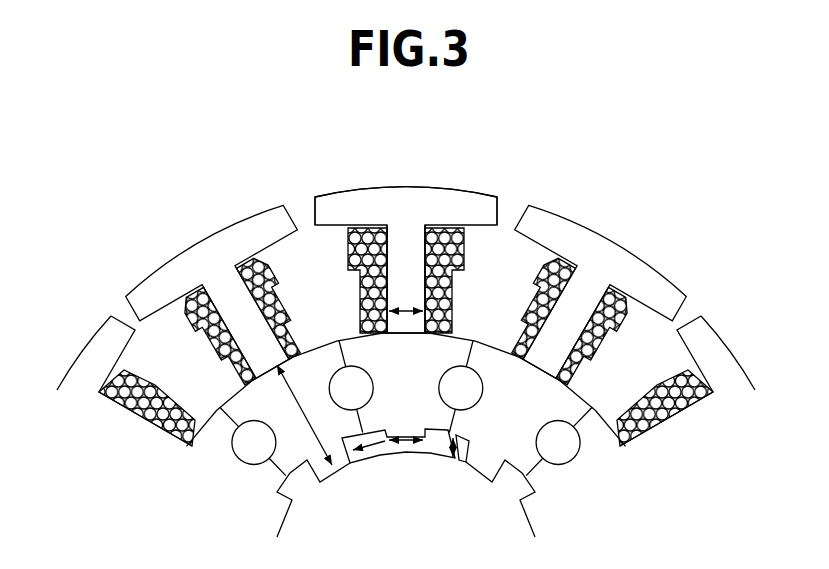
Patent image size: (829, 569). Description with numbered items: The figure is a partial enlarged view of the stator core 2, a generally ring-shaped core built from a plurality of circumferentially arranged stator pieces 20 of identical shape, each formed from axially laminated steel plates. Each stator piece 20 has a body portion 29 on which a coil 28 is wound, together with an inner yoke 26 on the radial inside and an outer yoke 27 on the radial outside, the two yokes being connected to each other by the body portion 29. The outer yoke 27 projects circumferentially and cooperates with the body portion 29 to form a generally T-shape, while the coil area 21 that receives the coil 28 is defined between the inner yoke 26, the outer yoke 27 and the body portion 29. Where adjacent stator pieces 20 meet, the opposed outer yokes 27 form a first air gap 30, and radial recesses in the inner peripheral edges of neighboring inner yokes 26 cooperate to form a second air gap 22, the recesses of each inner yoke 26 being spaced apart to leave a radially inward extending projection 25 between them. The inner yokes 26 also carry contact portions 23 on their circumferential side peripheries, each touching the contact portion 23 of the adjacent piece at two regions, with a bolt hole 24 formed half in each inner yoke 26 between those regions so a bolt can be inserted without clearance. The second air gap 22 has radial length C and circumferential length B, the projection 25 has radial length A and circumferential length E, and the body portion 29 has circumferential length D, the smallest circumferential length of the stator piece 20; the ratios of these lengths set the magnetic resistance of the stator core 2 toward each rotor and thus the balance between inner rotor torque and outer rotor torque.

The stator core 2 is at (627, 206).
The stator piece 20 is at (398, 186).
The coil area 21 is at (498, 245).
The second air gap 22 is at (435, 446).
The contact portion 23 is at (477, 354).
The bolt hole 24 is at (568, 463).
The projection 25 is at (403, 448).
The inner yoke 26 is at (452, 347).
The outer yoke 27 is at (443, 202).
The coil 28 is at (443, 237).
The body portion 29 is at (403, 252).
The first air gap 30 is at (303, 202).